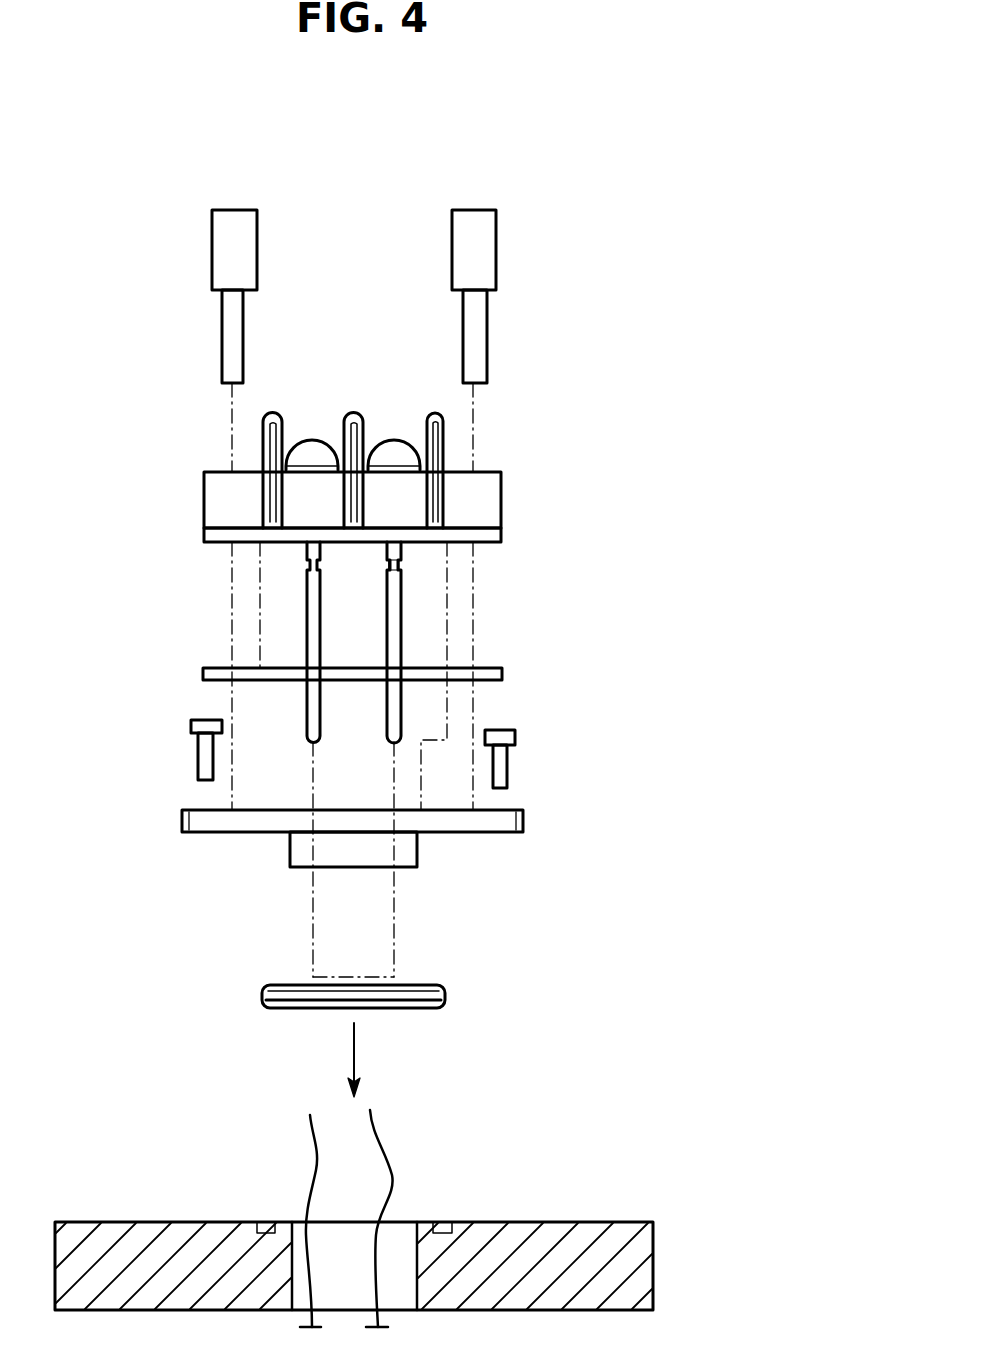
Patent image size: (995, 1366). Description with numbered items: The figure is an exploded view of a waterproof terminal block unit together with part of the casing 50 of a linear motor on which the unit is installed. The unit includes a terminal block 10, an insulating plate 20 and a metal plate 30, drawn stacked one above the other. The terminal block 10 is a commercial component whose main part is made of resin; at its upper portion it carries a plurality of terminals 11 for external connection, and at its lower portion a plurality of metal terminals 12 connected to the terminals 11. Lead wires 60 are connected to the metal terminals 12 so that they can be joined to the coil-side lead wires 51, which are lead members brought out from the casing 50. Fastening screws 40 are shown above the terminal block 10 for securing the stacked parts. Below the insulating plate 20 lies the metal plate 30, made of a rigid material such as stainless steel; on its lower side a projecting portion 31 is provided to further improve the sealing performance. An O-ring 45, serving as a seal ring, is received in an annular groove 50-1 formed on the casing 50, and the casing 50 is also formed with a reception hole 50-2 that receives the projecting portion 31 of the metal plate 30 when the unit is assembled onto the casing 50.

The terminal block 10 is at (503, 497).
The terminals 11 is at (312, 443).
The metal terminals 12 is at (403, 553).
The insulating plate 20 is at (476, 668).
The metal plate 30 is at (428, 808).
The projecting portion 31 is at (418, 850).
The screws 40 is at (496, 249).
The O-ring 45 is at (445, 995).
The casing 50 is at (143, 1220).
The annular groove 50-1 is at (443, 1222).
The reception hole 50-2 is at (296, 1222).
The coil-side lead wires 51 is at (312, 1143).
The lead wires 60 is at (384, 610).